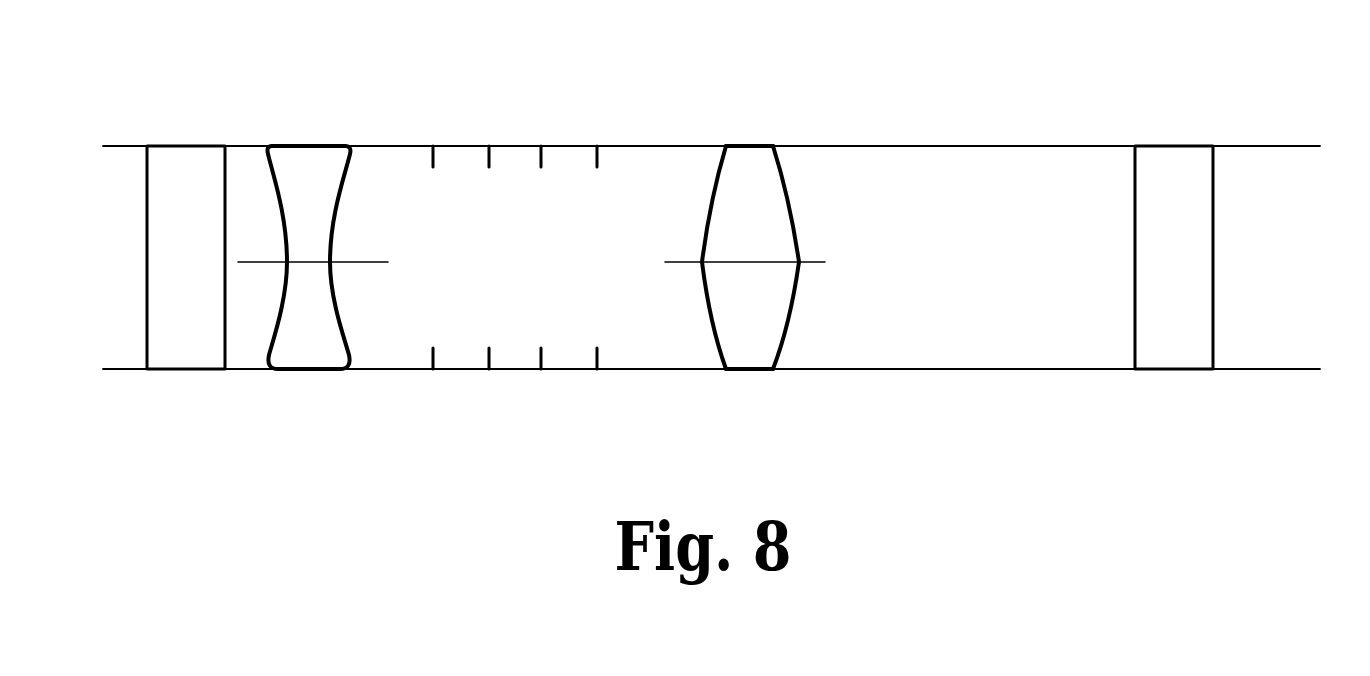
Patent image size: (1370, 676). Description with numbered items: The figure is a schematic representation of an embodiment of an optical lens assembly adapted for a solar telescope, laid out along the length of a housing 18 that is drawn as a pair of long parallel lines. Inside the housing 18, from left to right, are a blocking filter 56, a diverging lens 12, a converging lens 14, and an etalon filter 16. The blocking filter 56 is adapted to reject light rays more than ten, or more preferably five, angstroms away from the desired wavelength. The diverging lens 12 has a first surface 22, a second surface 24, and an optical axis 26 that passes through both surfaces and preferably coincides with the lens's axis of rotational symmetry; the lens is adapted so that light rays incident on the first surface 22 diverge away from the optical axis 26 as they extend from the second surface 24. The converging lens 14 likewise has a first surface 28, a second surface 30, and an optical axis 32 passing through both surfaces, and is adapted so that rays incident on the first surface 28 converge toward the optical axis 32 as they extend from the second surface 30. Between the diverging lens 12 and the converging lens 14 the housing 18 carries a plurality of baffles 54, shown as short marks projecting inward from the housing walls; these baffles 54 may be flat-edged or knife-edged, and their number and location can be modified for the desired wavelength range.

The diverging lens 12 is at (293, 260).
The converging lens 14 is at (725, 232).
The etalon filter 16 is at (1166, 185).
The housing 18 is at (938, 146).
The first surface 22 is at (263, 185).
The second surface 24 is at (340, 325).
The optical axis 26 is at (342, 257).
The first surface 28 is at (712, 190).
The second surface 30 is at (785, 340).
The optical axis 32 is at (673, 262).
The baffle 54 is at (437, 152).
The blocking filter 56 is at (177, 343).